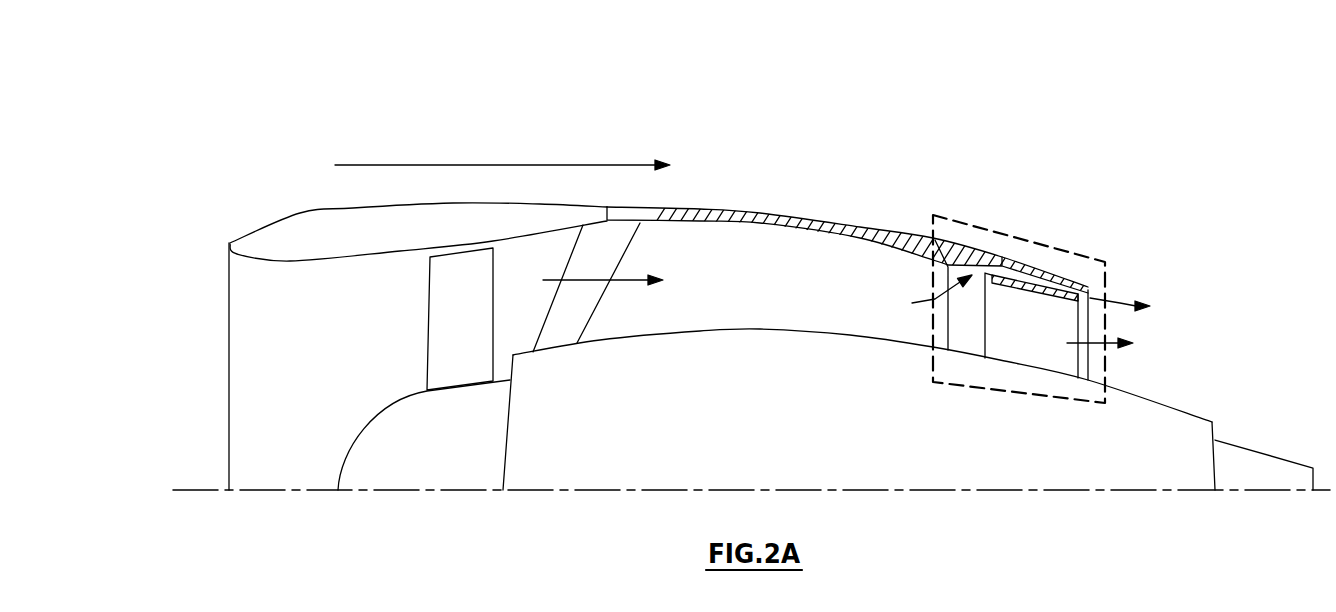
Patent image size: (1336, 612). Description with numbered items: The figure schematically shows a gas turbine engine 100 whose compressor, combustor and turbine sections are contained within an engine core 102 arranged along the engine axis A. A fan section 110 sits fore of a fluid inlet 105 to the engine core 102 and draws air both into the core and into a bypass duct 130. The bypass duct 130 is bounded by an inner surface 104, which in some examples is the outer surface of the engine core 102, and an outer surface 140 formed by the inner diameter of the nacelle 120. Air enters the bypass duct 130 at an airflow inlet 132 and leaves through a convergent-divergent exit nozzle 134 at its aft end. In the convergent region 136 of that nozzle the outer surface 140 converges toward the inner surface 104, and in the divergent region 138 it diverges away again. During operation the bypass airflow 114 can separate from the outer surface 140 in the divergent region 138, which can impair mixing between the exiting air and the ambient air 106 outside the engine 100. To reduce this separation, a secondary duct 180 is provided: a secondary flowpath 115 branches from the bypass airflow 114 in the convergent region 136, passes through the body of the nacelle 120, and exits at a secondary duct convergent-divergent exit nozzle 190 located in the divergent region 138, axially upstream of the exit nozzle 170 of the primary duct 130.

The gas turbine engine 100 is at (397, 98).
The engine core 102 is at (645, 463).
The inner surface 104 is at (693, 328).
The fluid inlet 105 is at (490, 447).
The ambient air 106 is at (545, 163).
The fan section 110 is at (440, 463).
The bypass airflow 114 is at (627, 282).
The secondary flowpath 115 is at (1032, 298).
The nacelle 120 is at (693, 210).
The bypass duct 130 is at (767, 258).
The airflow inlet 132 is at (240, 290).
The convergent-divergent exit nozzle 134 is at (1045, 245).
The convergent region 136 is at (1002, 285).
The divergent region 138 is at (1058, 298).
The outer surface 140 is at (863, 230).
The exit nozzle of the primary duct 170 is at (1090, 323).
The secondary duct 180 is at (1038, 278).
The secondary duct convergent-divergent exit nozzle 190 is at (1090, 293).
The engine centerline axis A is at (192, 490).